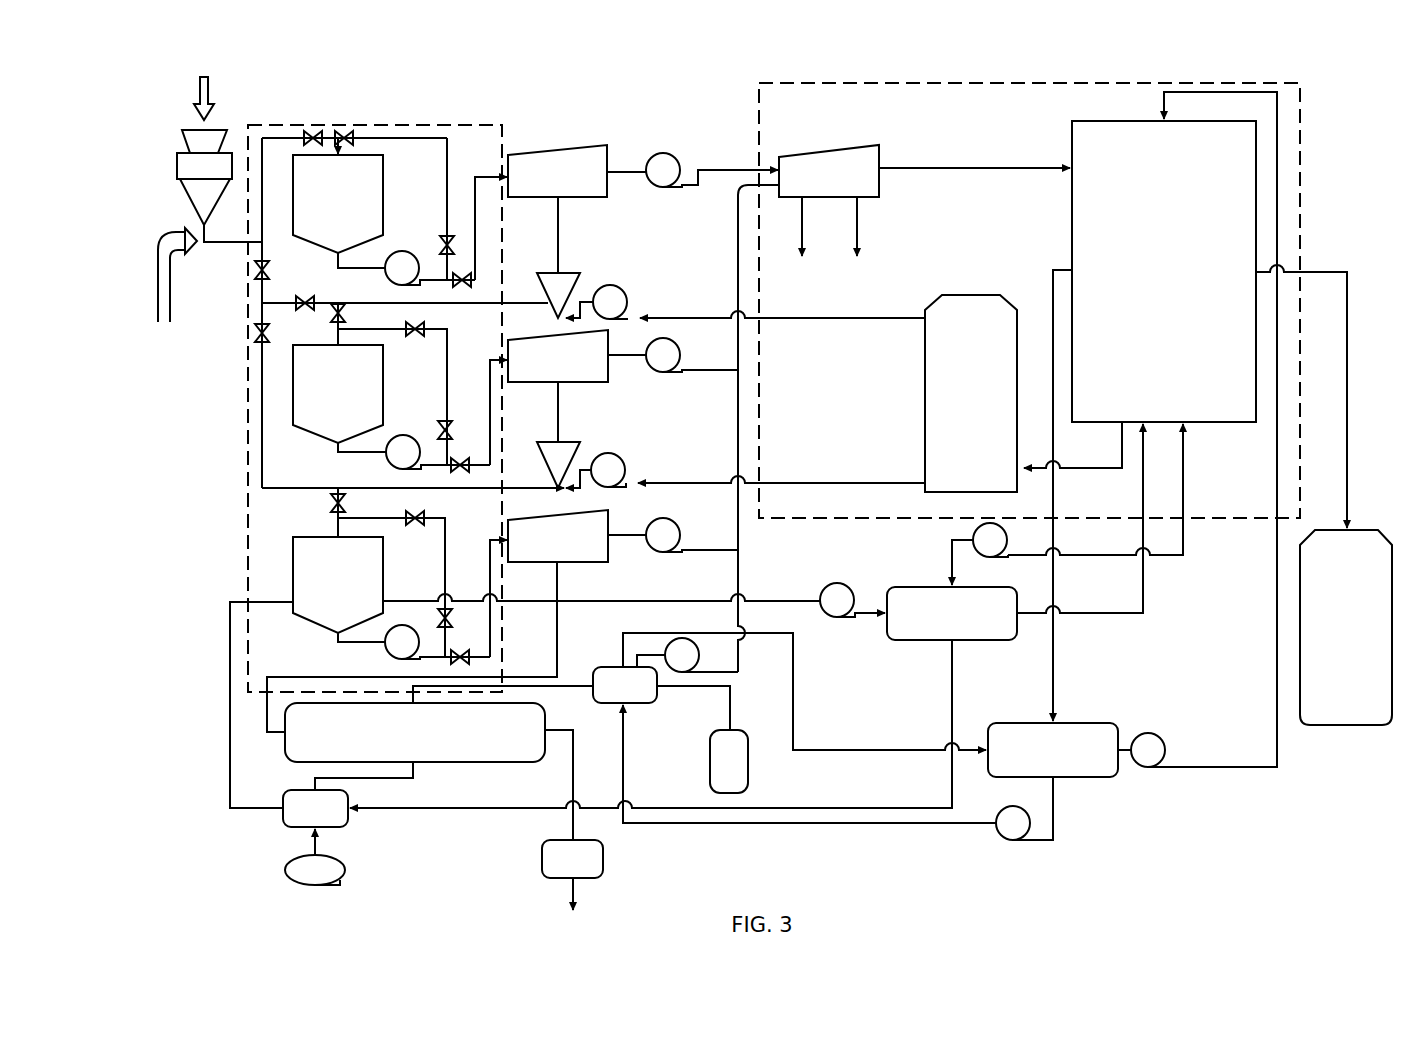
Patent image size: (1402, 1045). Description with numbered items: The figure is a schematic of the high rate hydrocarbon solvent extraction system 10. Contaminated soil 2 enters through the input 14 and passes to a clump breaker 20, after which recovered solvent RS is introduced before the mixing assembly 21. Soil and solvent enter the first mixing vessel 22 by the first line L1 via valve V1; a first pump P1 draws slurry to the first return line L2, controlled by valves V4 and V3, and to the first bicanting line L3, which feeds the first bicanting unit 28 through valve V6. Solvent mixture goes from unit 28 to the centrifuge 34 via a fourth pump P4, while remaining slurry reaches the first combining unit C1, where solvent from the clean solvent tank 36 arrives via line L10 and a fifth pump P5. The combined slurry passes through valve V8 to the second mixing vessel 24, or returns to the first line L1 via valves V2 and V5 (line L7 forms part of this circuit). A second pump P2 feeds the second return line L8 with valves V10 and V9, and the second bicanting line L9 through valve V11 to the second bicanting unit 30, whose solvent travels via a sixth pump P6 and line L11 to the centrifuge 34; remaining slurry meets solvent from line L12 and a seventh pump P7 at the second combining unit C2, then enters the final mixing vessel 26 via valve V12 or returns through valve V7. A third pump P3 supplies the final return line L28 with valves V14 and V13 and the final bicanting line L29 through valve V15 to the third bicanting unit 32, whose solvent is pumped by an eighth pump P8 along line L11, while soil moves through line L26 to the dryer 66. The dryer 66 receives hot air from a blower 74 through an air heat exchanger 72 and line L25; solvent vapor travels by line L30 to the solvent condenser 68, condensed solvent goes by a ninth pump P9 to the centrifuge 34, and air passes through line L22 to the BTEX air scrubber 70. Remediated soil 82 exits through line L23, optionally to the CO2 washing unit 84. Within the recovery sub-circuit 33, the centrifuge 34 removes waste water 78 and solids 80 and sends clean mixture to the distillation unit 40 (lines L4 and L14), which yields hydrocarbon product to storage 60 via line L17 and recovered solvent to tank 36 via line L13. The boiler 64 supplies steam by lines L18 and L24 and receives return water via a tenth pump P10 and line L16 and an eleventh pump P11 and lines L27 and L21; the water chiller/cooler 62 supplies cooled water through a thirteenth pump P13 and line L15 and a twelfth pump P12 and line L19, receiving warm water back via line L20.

The contaminated soil 2 is at (196, 79).
The high rate hydrocarbon solvent extraction system 10 is at (703, 101).
The input 14 is at (184, 132).
The clump breaker 20 is at (178, 165).
The recovered solvent RS is at (158, 284).
The mixing assembly 21 is at (450, 122).
The first mixing vessel 22 is at (339, 211).
The second mixing vessel 24 is at (339, 398).
The final mixing vessel 26 is at (339, 589).
The first bicanting unit 28 is at (557, 209).
The second bicanting unit 30 is at (558, 386).
The third bicanting unit 32 is at (558, 536).
The solvent/hydrocarbon extraction and recovery sub-circuit 33 is at (1033, 81).
The centrifuge 34 is at (829, 171).
The clean solvent tank 36 is at (971, 393).
The distillation unit 40 is at (1164, 271).
The storage 60 is at (1346, 627).
The water chiller/cooler 62 is at (1053, 750).
The boiler 64 is at (952, 613).
The dryer 66 is at (415, 732).
The solvent condenser 68 is at (625, 685).
The BTEX air scrubber 70 is at (748, 772).
The air heat exchanger 72 is at (315, 808).
The blower 74 is at (322, 890).
The waste water 78 is at (802, 228).
The micro-fines/solids 80 is at (858, 228).
The remediated soil 82 is at (572, 897).
The supercritical carbon dioxide washing unit 84 is at (572, 859).
The first combining unit C1 is at (562, 276).
The second combining unit C2 is at (567, 446).
The first pump P1 is at (396, 284).
The second pump P2 is at (396, 460).
The third pump P3 is at (394, 656).
The fourth pump P4 is at (661, 153).
The fifth pump P5 is at (613, 286).
The sixth pump P6 is at (663, 372).
The seventh pump P7 is at (627, 467).
The eighth pump P8 is at (663, 553).
The ninth pump P9 is at (681, 674).
The tenth pump P10 is at (985, 530).
The eleventh pump P11 is at (850, 592).
The twelfth pump P12 is at (1040, 845).
The thirteenth pump P13 is at (1142, 735).
The valve V1 is at (313, 130).
The valve V2 is at (261, 276).
The valve V3 is at (345, 130).
The valve V4 is at (443, 242).
The valve V5 is at (305, 297).
The valve V6 is at (464, 276).
The valve V7 is at (260, 337).
The valve V8 is at (347, 313).
The valve V9 is at (415, 337).
The valve V10 is at (444, 427).
The valve V11 is at (461, 458).
The valve V12 is at (330, 503).
The valve V13 is at (410, 512).
The valve V14 is at (443, 613).
The valve V15 is at (468, 663).
The first line L1 is at (262, 136).
The first return line L2 is at (448, 150).
The first bicanting line L3 is at (476, 235).
The line L4 is at (972, 167).
The line L7 is at (262, 437).
The second return line L8 is at (450, 337).
The second bicanting line L9 is at (492, 432).
The line L10 is at (882, 315).
The line L11 is at (740, 398).
The line L12 is at (893, 483).
The line L13 is at (1090, 470).
The line L14 is at (1053, 286).
The line L15 is at (1279, 133).
The line L16 is at (1185, 560).
The line L17 is at (1347, 268).
The line L18 is at (1088, 615).
The line L19 is at (870, 824).
The line L20 is at (905, 748).
The line L21 is at (765, 598).
The line L22 is at (731, 706).
The line L23 is at (573, 755).
The line L24 is at (487, 811).
The line L25 is at (418, 780).
The line L26 is at (267, 695).
The line L27 is at (230, 660).
The final return line L28 is at (458, 530).
The final bicanting line L29 is at (492, 635).
The line L30 is at (571, 687).